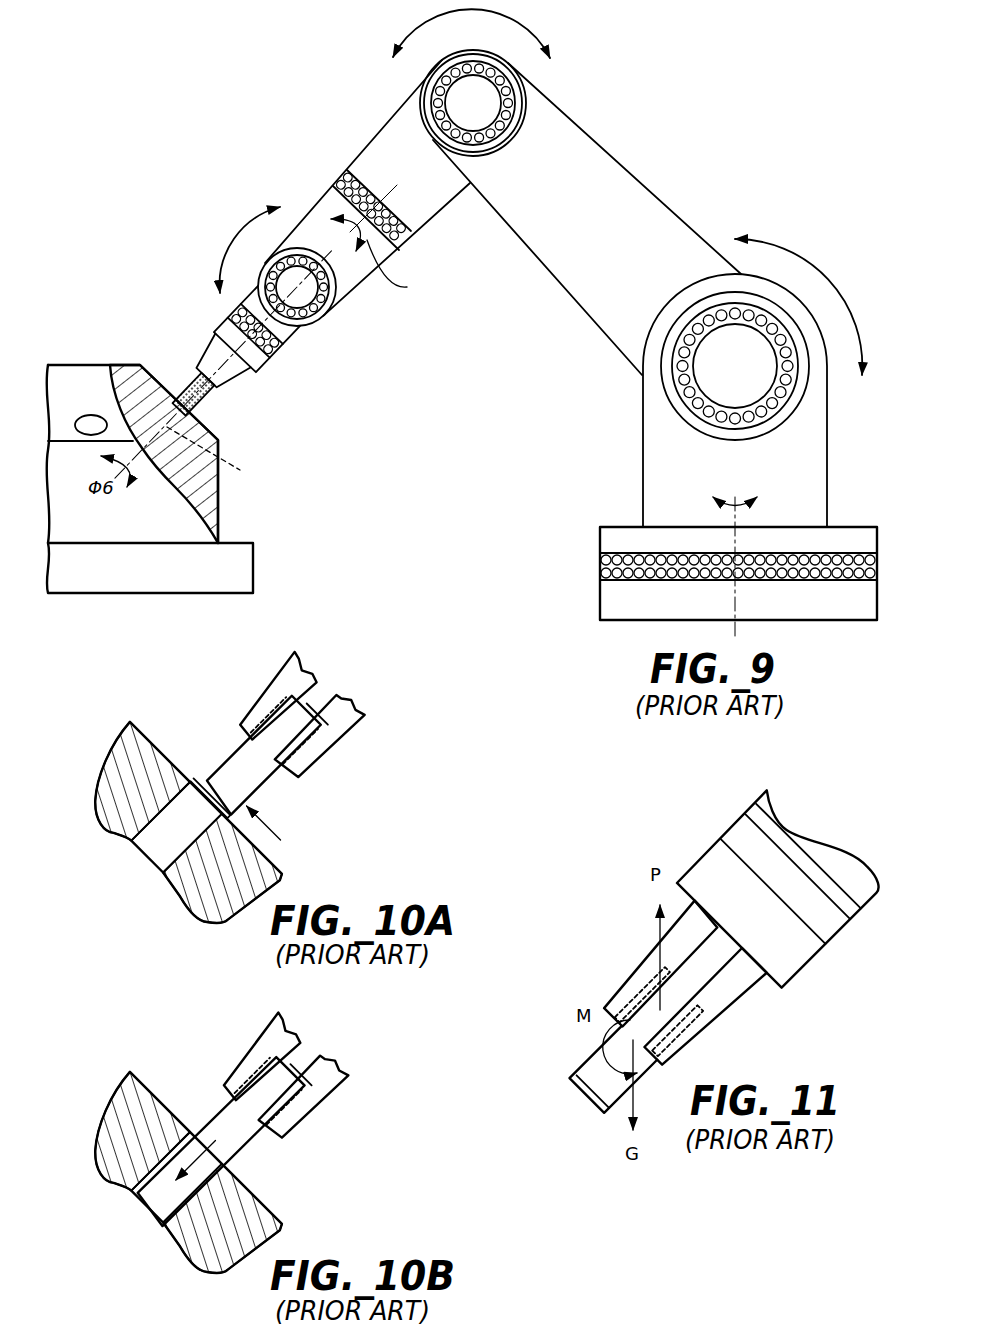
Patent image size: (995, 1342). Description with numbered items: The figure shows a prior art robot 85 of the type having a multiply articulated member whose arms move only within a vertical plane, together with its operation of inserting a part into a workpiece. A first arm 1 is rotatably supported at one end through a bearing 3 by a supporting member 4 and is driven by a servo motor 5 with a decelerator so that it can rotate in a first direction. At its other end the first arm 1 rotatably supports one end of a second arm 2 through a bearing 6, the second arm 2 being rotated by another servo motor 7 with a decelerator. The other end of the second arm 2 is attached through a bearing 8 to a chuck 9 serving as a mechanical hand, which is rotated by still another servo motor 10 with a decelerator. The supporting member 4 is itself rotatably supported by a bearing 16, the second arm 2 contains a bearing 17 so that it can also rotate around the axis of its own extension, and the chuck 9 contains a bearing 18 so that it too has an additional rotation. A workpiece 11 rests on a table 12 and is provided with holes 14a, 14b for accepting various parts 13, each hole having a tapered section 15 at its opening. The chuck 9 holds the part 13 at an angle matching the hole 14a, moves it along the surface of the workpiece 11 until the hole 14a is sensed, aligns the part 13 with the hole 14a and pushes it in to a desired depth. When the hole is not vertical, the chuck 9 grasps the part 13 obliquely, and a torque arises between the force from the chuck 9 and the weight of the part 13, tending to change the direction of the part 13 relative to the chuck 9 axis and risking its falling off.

In FIG. 9, the robot 85 is at (482, 320).
In FIG. 9, the first arm 1 is at (587, 219).
In FIG. 9, the second arm 2 is at (395, 183).
In FIG. 9, the bearing 3 is at (695, 366).
In FIG. 9, the supporting member 4 is at (710, 400).
In FIG. 9, the servo motor 5 is at (684, 366).
In FIG. 9, the bearing 6 is at (501, 103).
In FIG. 9, the servo motor 7 is at (521, 103).
In FIG. 9, the bearing 8 is at (317, 290).
In FIG. 9, the chuck 9 is at (237, 382).
In FIG. 10A, the chuck 9 is at (298, 716).
In FIG. 10B, the chuck 9 is at (280, 1076).
In FIG. 11, the chuck 9 is at (731, 932).
In FIG. 9, the servo motor 10 is at (324, 310).
In FIG. 9, the workpiece 11 is at (170, 454).
In FIG. 10A, the workpiece 11 is at (210, 832).
In FIG. 10B, the workpiece 11 is at (210, 1182).
In FIG. 9, the table 12 is at (196, 560).
In FIG. 9, the part 13 is at (172, 370).
In FIG. 10A, the part 13 is at (280, 774).
In FIG. 10B, the part 13 is at (231, 1141).
In FIG. 11, the part 13 is at (591, 1066).
In FIG. 9, the hole 14a is at (222, 454).
In FIG. 10A, the hole 14a is at (142, 839).
In FIG. 10B, the hole 14a is at (142, 1189).
In FIG. 9, the hole 14b is at (103, 362).
In FIG. 10A, the tapered section 15 is at (201, 765).
In FIG. 9, the bearing 16 is at (703, 573).
In FIG. 9, the bearing 17 is at (341, 194).
In FIG. 9, the bearing 18 is at (278, 345).